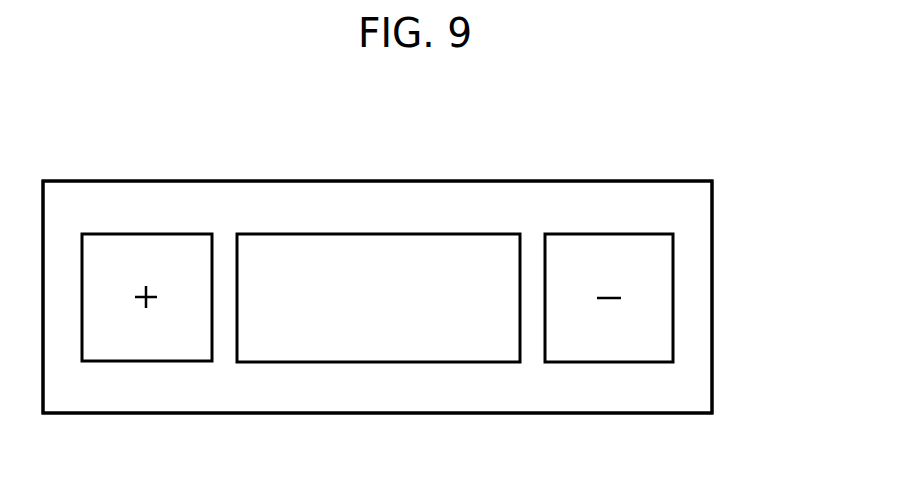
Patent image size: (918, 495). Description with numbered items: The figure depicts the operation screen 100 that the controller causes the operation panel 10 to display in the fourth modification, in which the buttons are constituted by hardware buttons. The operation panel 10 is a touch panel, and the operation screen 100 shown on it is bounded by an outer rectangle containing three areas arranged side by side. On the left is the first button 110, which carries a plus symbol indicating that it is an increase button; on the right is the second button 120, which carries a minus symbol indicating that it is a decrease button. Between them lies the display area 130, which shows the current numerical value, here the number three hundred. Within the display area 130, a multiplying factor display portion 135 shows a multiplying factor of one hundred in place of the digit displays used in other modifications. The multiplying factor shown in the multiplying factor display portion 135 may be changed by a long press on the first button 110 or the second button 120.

The operation panel 10 is at (240, 180).
The operation screen 100 is at (687, 299).
The first button 110 is at (147, 232).
The second button 120 is at (620, 232).
The display area 130 is at (427, 232).
The multiplying factor display portion 135 is at (472, 340).